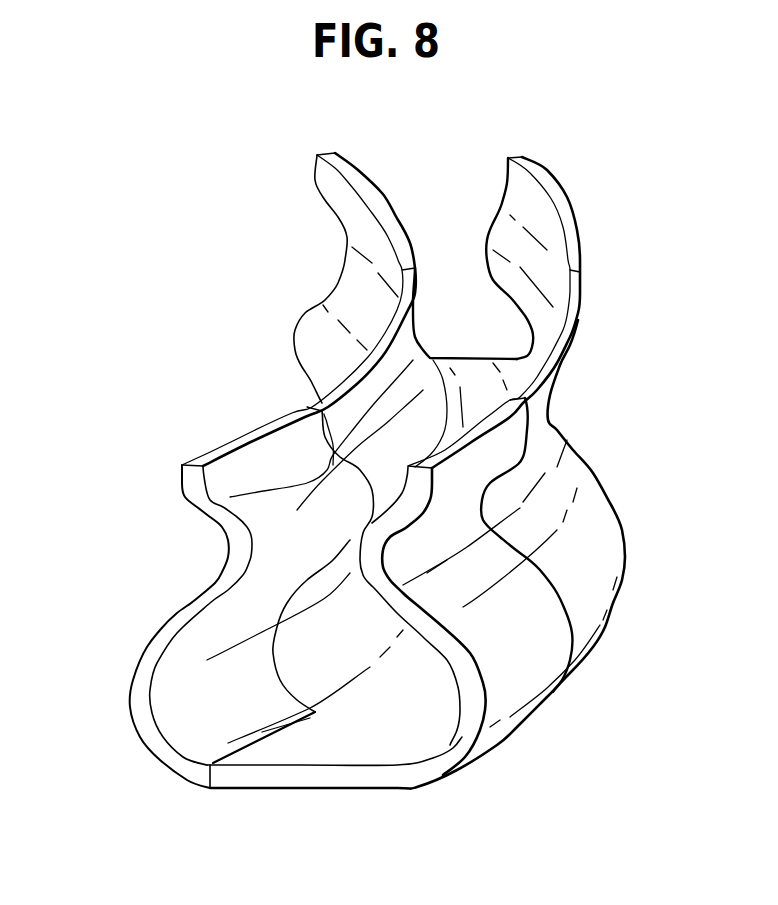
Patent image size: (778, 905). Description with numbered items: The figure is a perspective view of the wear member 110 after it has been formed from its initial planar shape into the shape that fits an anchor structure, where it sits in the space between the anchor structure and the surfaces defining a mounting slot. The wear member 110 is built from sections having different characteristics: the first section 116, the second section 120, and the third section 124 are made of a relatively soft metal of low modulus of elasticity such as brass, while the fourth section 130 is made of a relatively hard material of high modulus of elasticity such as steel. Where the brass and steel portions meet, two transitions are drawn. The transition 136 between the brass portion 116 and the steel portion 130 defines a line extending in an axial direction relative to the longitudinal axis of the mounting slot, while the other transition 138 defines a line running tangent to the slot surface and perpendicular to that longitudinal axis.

The wear member 110 is at (134, 308).
The first section 116 is at (232, 452).
The second section 120 is at (337, 287).
The third section 124 is at (597, 523).
The fourth section 130 is at (421, 716).
The transition 136 is at (280, 733).
The transition 138 is at (230, 497).